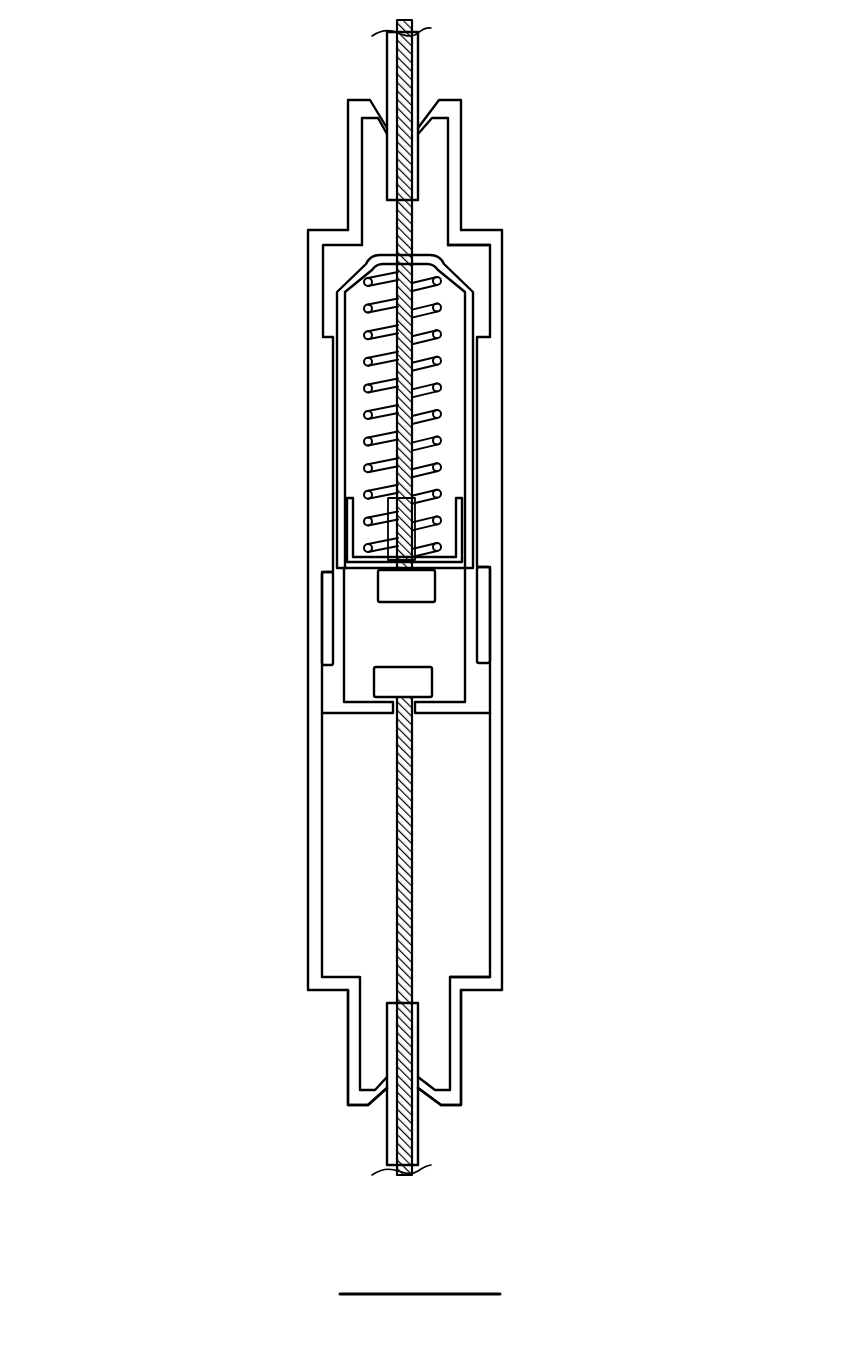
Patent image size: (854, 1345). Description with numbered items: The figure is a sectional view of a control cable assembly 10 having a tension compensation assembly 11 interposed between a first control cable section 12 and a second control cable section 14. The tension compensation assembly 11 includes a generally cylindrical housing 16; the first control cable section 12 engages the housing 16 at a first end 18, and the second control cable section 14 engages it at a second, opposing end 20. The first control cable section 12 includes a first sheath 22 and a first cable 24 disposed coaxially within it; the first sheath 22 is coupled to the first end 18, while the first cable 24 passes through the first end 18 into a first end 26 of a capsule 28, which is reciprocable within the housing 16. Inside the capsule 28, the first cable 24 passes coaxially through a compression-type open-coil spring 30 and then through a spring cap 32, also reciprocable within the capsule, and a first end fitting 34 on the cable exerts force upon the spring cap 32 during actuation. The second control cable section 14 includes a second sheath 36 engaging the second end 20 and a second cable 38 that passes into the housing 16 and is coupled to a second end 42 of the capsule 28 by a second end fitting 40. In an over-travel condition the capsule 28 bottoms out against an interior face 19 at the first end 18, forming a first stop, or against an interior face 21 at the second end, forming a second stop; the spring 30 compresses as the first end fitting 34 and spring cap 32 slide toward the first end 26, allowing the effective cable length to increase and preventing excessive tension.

The control cable assembly 10 is at (102, 265).
The tension compensation assembly 11 is at (503, 463).
The first control cable section 12 is at (387, 79).
The second control cable section 14 is at (421, 1127).
The housing 16 is at (503, 300).
The first end 18 is at (462, 172).
The interior face 19 is at (478, 244).
The second end 20 is at (348, 1053).
The interior face 21 is at (468, 976).
The first sheath 22 is at (420, 79).
The first cable 24 is at (420, 33).
The first end 26 is at (343, 283).
The capsule 28 is at (473, 385).
The open-coil spring 30 is at (368, 394).
The spring cap 32 is at (355, 562).
The first end fitting 34 is at (433, 589).
The second sheath 36 is at (387, 1137).
The second cable 38 is at (410, 1173).
The second end fitting 40 is at (373, 683).
The second end 42 is at (461, 713).